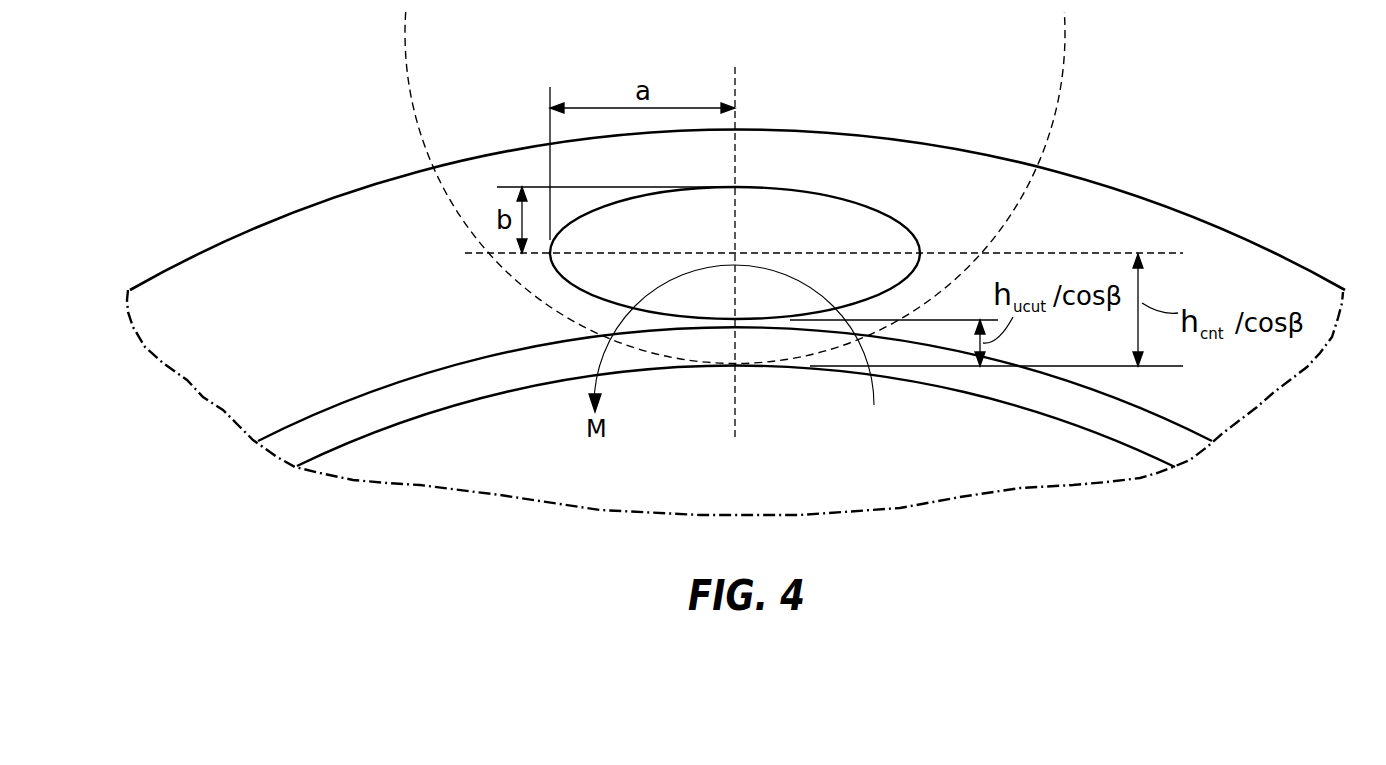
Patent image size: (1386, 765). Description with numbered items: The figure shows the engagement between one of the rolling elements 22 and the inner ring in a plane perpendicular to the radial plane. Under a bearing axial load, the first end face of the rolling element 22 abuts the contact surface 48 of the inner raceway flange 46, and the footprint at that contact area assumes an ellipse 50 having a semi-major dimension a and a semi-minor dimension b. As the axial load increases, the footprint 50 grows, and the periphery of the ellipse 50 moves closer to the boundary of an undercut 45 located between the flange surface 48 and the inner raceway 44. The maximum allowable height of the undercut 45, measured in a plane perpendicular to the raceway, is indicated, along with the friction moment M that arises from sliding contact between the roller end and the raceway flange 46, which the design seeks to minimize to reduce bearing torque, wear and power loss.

The rolling element 22 is at (1057, 110).
The inner raceway 44 is at (1062, 422).
The undercut 45 is at (1178, 424).
The inner raceway flange 46 is at (1224, 231).
The contact surface 48 is at (297, 247).
The ellipse 50 is at (842, 199).